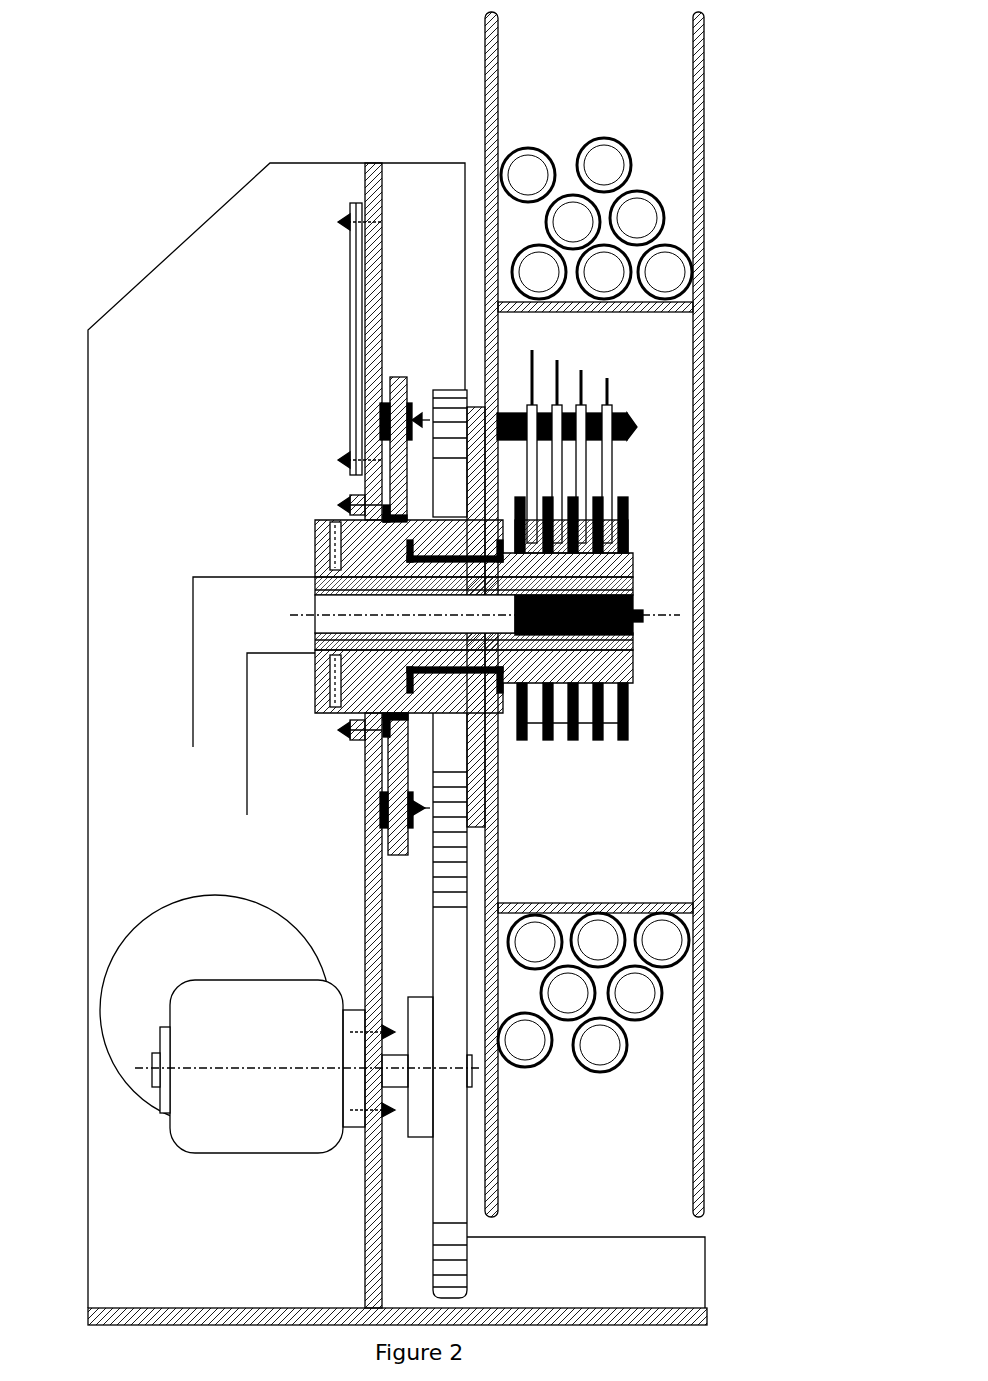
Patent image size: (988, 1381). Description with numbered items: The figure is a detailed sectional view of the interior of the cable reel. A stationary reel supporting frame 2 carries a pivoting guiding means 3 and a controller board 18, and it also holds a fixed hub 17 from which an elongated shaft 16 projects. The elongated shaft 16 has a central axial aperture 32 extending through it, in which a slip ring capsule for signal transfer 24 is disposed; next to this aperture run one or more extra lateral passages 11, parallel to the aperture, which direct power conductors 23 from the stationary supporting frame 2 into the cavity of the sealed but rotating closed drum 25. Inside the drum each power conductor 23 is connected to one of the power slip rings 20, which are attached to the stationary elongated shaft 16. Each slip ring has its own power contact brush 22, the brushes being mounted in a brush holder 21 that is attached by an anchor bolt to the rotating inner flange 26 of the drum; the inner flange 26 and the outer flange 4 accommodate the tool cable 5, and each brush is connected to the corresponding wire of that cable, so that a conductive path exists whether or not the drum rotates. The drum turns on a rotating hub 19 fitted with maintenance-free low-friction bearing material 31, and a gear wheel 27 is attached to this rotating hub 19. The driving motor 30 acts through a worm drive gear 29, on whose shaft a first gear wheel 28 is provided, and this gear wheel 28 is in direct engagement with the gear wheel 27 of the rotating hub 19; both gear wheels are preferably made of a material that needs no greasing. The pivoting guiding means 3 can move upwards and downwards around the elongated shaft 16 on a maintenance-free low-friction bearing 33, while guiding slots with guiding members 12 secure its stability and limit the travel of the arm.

The reel supporting frame 2 is at (372, 163).
The pivoting guiding means 3 is at (398, 378).
The outer flange 4 is at (705, 70).
The tool cable 5 is at (525, 150).
The extra lateral passages 11 is at (315, 588).
The guiding members 12 is at (365, 858).
The elongated shaft 16 is at (315, 565).
The fixed hub 17 is at (318, 520).
The controller board 18 is at (352, 355).
The rotating hub 19 is at (487, 795).
The power slip rings 20 is at (608, 727).
The brush holder 21 is at (620, 413).
The power contact brushes 22 is at (608, 455).
The power conductors 23 is at (632, 566).
The slip ring capsule for signal transfer 24 is at (640, 630).
The closed drum 25 is at (680, 903).
The inner flange 26 is at (487, 850).
The gear wheel 27 is at (445, 388).
The gear wheel 28 is at (467, 1262).
The worm drive gear 29 is at (235, 1153).
The driving motor 30 is at (215, 895).
The bearing material 31 is at (340, 722).
The axial aperture 32 is at (315, 630).
The low-friction bearing 33 is at (360, 745).